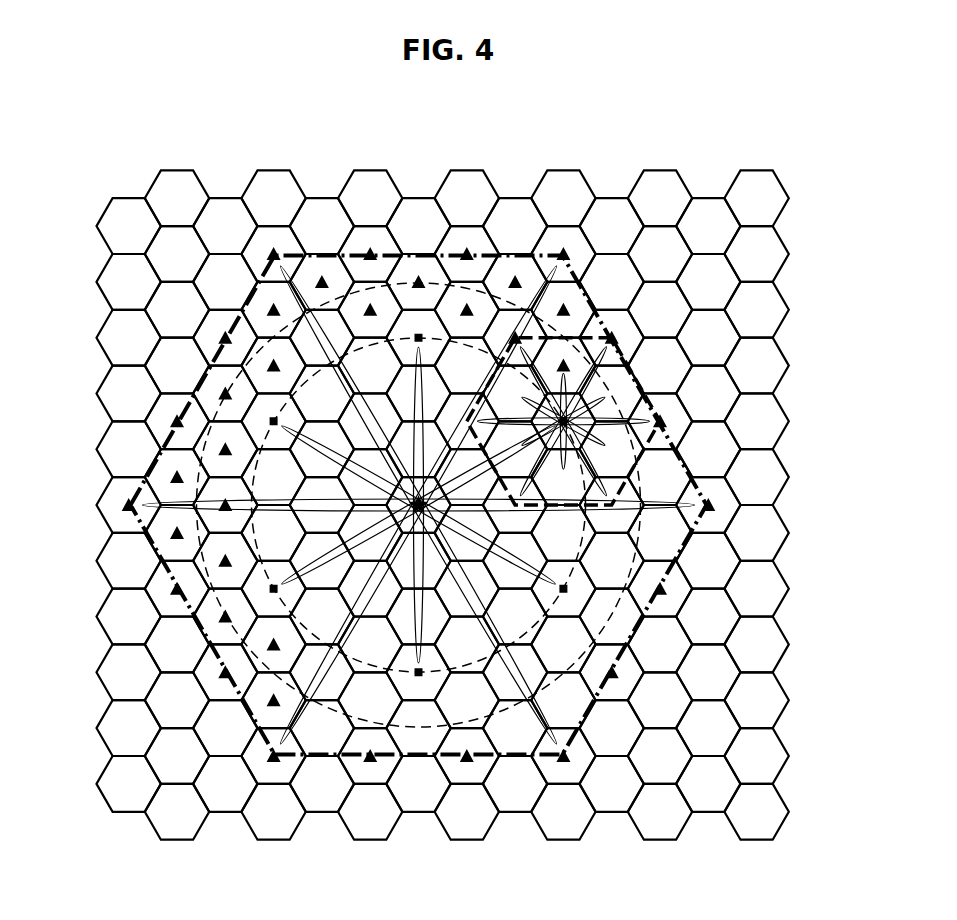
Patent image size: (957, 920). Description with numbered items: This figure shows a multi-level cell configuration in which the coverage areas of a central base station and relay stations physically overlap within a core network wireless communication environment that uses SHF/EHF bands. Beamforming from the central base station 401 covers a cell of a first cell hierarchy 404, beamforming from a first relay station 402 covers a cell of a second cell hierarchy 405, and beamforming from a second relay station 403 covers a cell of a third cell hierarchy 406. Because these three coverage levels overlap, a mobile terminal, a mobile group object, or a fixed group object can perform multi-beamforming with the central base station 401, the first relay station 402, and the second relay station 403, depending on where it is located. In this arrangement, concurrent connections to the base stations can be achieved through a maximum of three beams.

The central base station 401 is at (383, 593).
The first relay station 402 is at (418, 335).
The second relay station 403 is at (230, 388).
The first cell hierarchy 404 is at (549, 265).
The second cell hierarchy 405 is at (597, 317).
The third cell hierarchy 406 is at (703, 494).